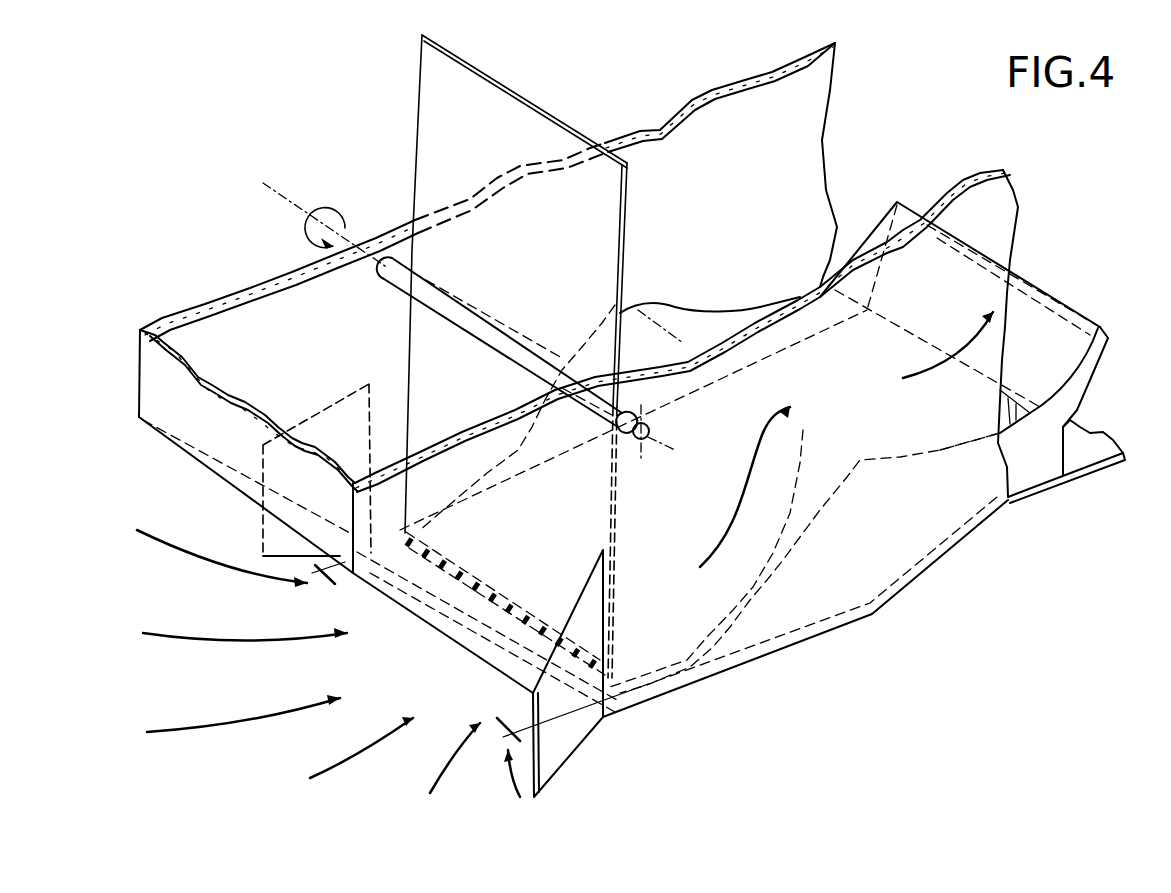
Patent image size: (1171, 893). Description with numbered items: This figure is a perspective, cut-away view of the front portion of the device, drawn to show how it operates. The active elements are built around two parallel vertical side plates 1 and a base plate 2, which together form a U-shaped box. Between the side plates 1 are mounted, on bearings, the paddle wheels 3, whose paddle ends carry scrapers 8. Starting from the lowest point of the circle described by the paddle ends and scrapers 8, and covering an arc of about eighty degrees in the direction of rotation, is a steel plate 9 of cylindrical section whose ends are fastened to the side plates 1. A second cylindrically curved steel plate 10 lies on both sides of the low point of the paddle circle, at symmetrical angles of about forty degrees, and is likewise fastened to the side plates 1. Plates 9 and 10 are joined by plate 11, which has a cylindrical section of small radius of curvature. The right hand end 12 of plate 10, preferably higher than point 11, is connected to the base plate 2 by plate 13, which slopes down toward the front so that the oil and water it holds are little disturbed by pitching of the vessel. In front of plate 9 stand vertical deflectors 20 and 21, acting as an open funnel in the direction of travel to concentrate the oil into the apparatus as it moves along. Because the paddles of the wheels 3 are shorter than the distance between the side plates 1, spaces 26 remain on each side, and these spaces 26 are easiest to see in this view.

The side plates 1 is at (987, 168).
The base plate 2 is at (1080, 473).
The paddle wheels 3 is at (511, 262).
The scrapers 8 is at (613, 677).
The steel plate with cylindrical section 9 is at (788, 556).
The steel plate with cylindrical section 10 is at (980, 450).
The connecting plate 11 is at (860, 460).
The right hand end of plate 10 12 is at (1102, 332).
The plate 13 is at (1090, 385).
The vertical deflector 20 is at (263, 529).
The vertical deflector 21 is at (568, 745).
The spaces 26 is at (500, 730).